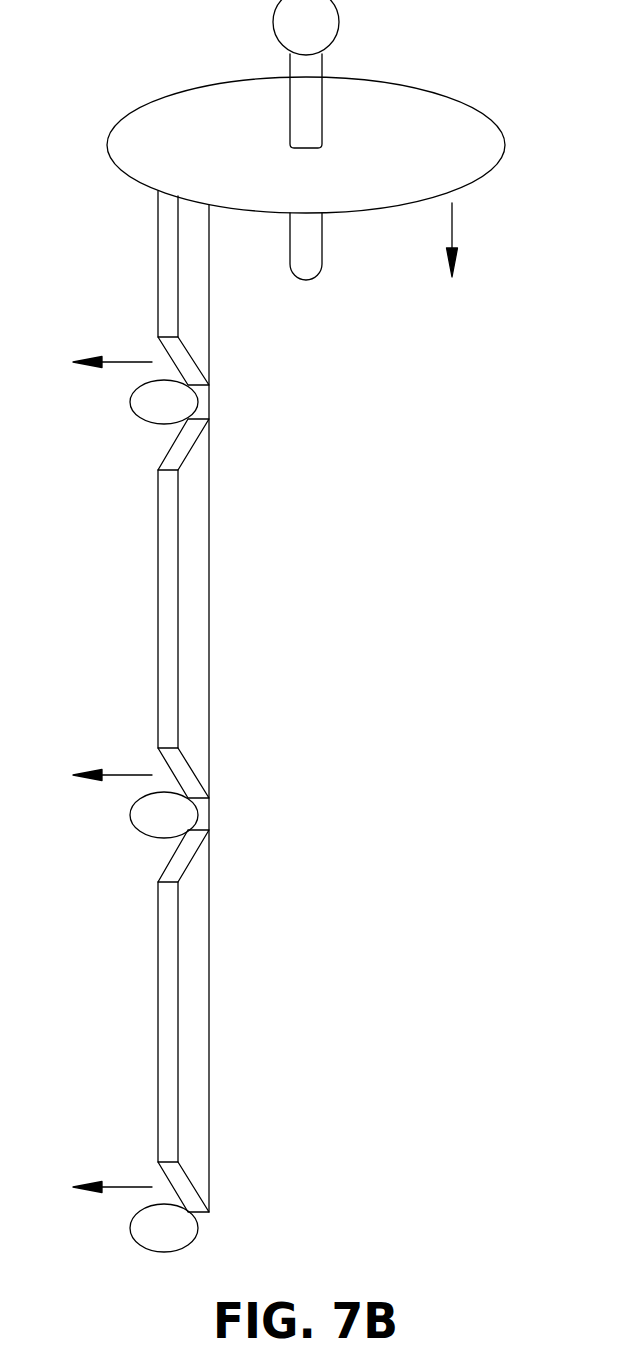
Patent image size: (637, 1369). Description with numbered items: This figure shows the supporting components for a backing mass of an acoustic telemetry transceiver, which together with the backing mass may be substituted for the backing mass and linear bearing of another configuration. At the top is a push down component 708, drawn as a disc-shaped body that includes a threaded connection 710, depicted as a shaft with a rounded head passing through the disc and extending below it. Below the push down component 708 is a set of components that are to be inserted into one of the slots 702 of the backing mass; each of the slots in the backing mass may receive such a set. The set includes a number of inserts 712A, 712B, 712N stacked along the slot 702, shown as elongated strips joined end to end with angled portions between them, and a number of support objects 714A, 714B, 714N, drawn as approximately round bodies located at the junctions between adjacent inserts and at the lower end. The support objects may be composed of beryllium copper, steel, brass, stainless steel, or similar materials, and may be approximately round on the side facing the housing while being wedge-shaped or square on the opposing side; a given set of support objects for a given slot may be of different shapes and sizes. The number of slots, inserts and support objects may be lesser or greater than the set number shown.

The slot 702 is at (210, 407).
The push down component 708 is at (422, 105).
The threaded connection 710 is at (300, 103).
The insert 712A is at (158, 263).
The insert 712B is at (158, 610).
The insert 712N is at (158, 1022).
The support object 714A is at (130, 403).
The support object 714B is at (130, 815).
The support object 714N is at (130, 1228).